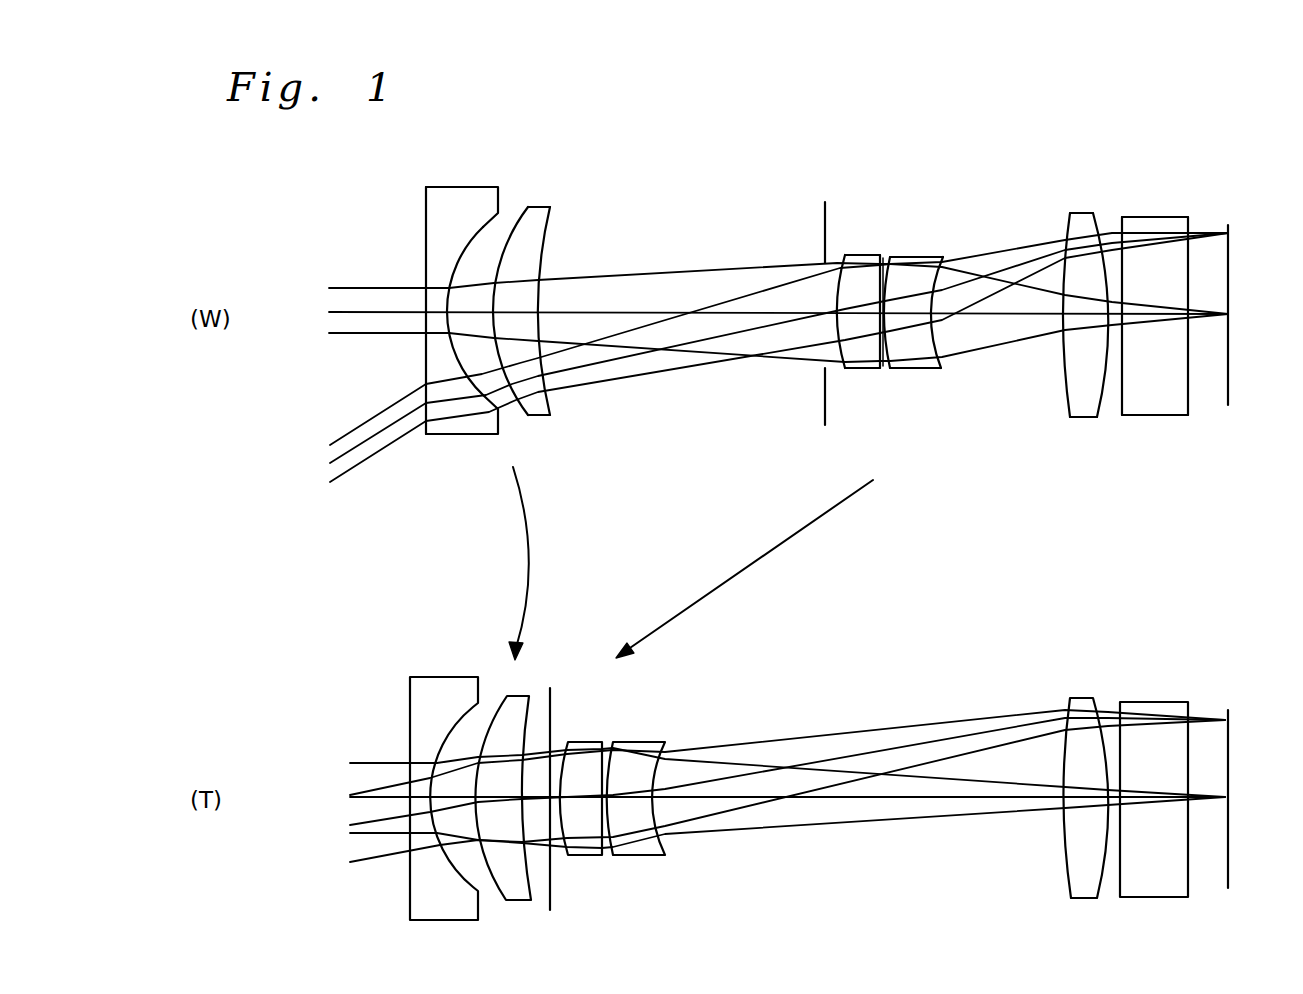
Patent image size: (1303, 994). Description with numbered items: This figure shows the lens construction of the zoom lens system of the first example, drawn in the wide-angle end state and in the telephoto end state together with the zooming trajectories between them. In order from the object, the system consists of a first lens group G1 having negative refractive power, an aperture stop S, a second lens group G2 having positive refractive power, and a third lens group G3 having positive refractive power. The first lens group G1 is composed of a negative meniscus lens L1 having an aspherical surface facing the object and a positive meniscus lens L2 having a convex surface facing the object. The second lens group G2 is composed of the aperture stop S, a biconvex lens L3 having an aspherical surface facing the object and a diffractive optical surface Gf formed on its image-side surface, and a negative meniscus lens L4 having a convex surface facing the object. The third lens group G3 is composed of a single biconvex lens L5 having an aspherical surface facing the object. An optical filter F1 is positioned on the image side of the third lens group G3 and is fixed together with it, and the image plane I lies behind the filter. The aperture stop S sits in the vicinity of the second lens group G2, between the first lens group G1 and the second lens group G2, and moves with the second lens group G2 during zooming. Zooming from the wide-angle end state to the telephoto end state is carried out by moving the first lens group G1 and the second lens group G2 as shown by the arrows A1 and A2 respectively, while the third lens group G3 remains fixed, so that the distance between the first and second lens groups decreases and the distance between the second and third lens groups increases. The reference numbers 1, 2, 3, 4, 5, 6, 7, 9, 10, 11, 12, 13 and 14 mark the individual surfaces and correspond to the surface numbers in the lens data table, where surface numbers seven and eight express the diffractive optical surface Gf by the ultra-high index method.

The surface number 1 is at (427, 418).
The surface number 2 is at (478, 397).
The surface number 3 is at (513, 403).
The surface number 4 is at (550, 405).
The surface number 5 is at (825, 413).
The surface number 6 is at (838, 372).
The surface number 7 is at (883, 370).
The surface number 9 is at (890, 369).
The surface number 10 is at (943, 364).
The surface number 11 is at (1067, 408).
The surface number 12 is at (1095, 408).
The surface number 13 is at (1123, 402).
The surface number 14 is at (1190, 397).
The first lens group G1 is at (543, 141).
The second lens group G2 is at (942, 141).
The third lens group G3 is at (1102, 142).
The negative meniscus lens L1 is at (457, 197).
The positive meniscus lens L2 is at (532, 215).
The biconvex lens L3 is at (860, 257).
The negative meniscus lens L4 is at (915, 257).
The biconvex lens L5 is at (1082, 218).
The aperture stop S is at (824, 217).
The diffractive optical surface Gf is at (888, 437).
The optical filter F1 is at (1157, 222).
The image plane I is at (1228, 227).
The arrow A1 is at (537, 558).
The arrow A2 is at (770, 553).